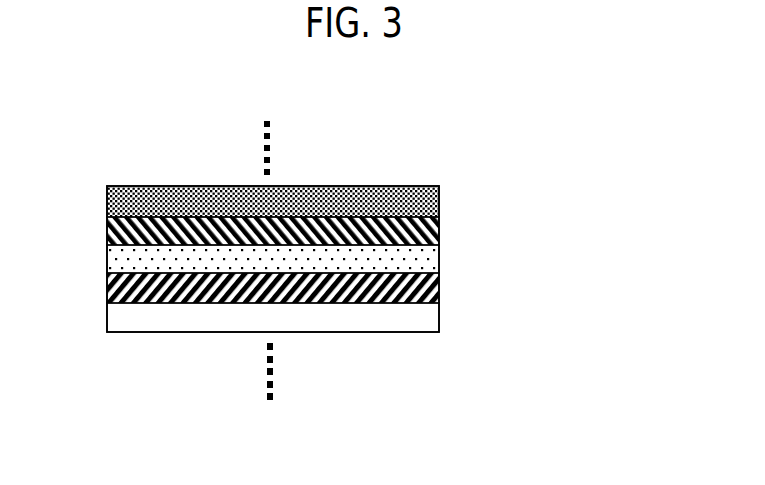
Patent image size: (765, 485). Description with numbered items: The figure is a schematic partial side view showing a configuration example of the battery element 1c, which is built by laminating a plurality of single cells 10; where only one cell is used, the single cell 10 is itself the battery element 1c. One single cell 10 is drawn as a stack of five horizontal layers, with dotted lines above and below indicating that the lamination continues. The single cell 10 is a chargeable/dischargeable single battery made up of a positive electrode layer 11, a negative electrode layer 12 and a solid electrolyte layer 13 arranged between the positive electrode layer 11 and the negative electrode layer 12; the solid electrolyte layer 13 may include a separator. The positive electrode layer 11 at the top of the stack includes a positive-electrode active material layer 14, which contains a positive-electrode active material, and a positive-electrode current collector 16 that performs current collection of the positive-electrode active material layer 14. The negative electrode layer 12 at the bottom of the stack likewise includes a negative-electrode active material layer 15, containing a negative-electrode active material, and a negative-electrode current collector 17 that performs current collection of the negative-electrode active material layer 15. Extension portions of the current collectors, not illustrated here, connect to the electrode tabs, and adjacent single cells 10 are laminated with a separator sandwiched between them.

The battery element 1c is at (110, 120).
The single cell 10 is at (655, 165).
The positive electrode layer 11 is at (605, 165).
The negative electrode layer 12 is at (605, 277).
The solid electrolyte layer 13 is at (439, 266).
The positive-electrode active material layer 14 is at (439, 231).
The negative-electrode active material layer 15 is at (439, 282).
The positive-electrode current collector 16 is at (439, 199).
The negative-electrode current collector 17 is at (439, 312).